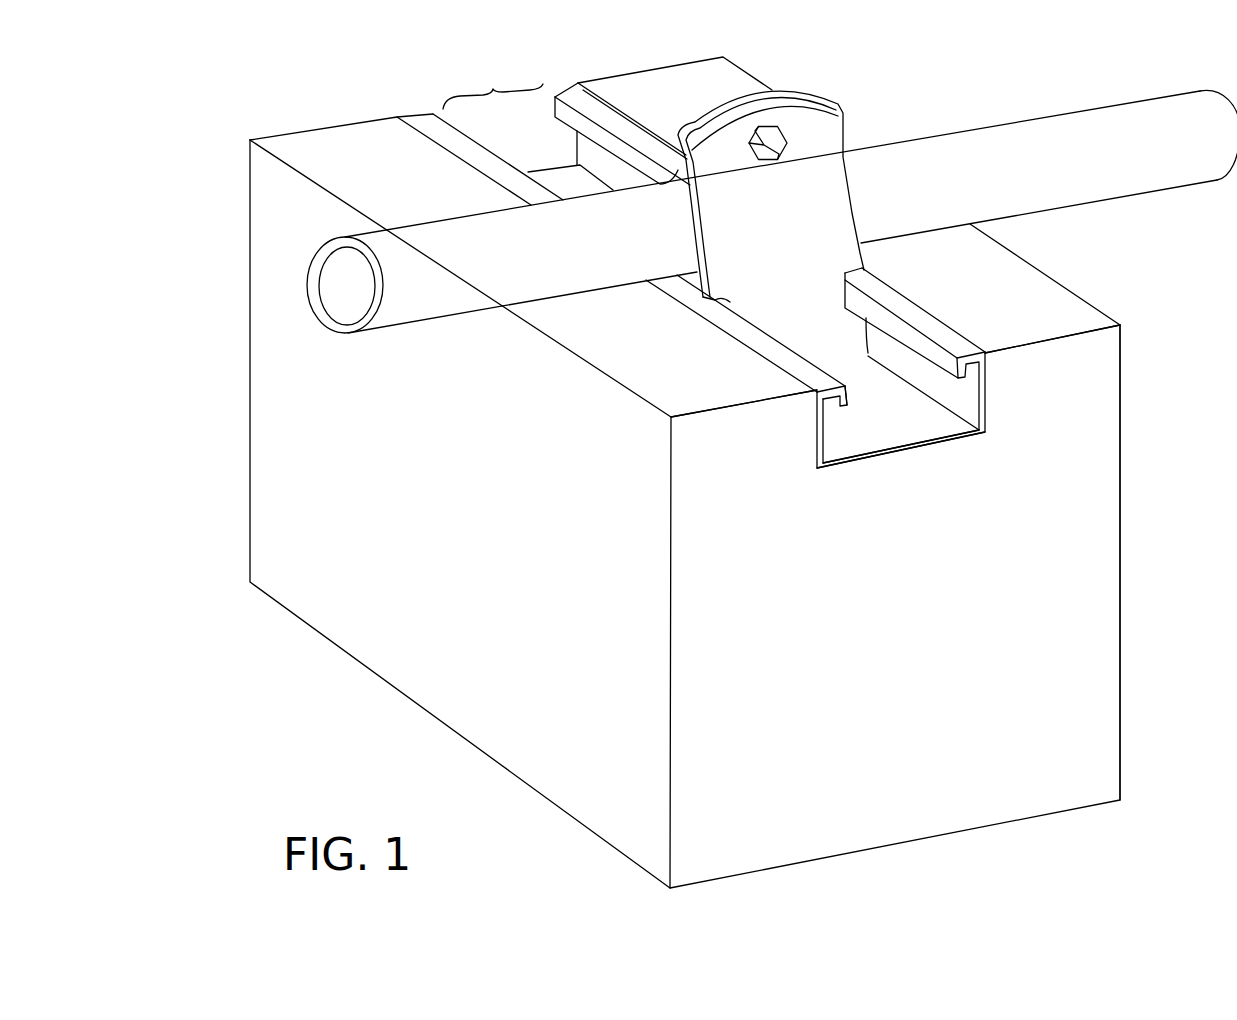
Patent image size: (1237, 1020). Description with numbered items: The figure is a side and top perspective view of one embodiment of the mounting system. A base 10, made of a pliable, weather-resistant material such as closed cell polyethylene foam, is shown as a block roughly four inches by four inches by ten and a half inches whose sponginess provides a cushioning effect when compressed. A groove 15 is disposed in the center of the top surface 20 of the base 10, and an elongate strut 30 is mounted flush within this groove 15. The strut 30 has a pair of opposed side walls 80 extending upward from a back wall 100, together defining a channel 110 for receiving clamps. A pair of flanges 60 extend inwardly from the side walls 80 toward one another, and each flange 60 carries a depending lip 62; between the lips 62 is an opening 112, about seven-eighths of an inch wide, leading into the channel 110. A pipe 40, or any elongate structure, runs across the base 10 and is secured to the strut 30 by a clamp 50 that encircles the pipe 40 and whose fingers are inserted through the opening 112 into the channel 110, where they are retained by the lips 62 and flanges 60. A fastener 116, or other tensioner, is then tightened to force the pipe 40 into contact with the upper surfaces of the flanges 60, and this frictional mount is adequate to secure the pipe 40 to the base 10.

The base 10 is at (1100, 598).
The groove 15 is at (967, 438).
The top surface 20 is at (1053, 298).
The elongate strut 30 is at (843, 462).
The pipe 40 is at (1143, 108).
The clamp 50 is at (833, 130).
The flanges 60 is at (770, 343).
The depending lip 62 is at (923, 357).
The side walls 80 is at (830, 422).
The back wall 100 is at (872, 433).
The channel 110 is at (557, 168).
The opening 112 is at (493, 82).
The fastener 116 is at (775, 150).